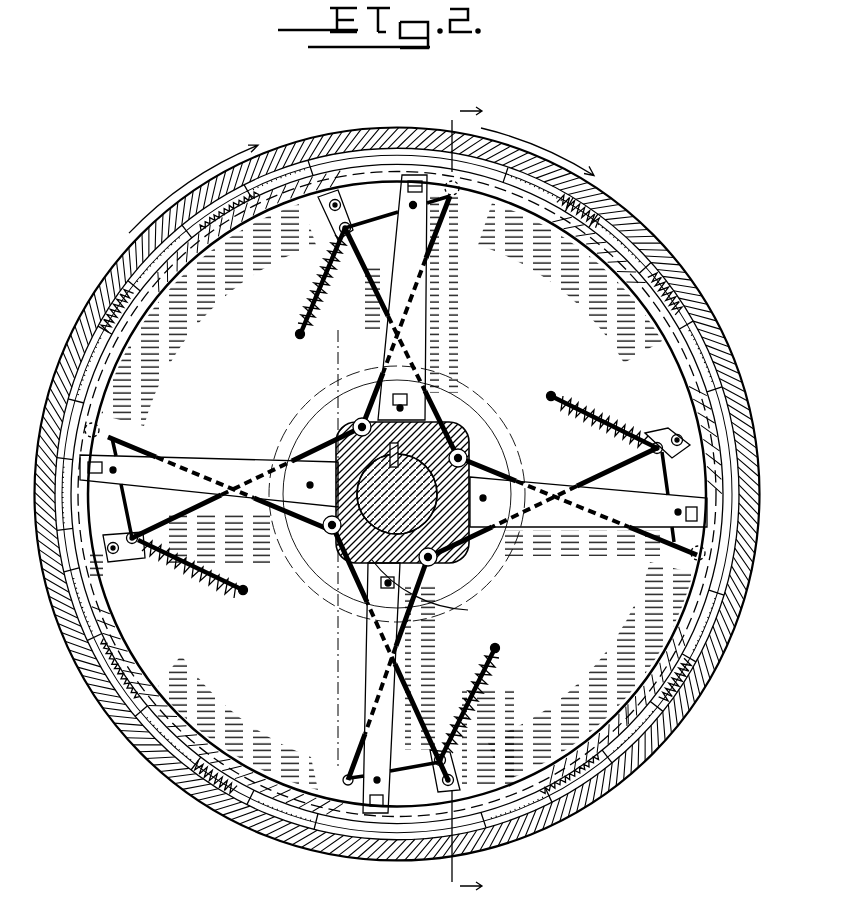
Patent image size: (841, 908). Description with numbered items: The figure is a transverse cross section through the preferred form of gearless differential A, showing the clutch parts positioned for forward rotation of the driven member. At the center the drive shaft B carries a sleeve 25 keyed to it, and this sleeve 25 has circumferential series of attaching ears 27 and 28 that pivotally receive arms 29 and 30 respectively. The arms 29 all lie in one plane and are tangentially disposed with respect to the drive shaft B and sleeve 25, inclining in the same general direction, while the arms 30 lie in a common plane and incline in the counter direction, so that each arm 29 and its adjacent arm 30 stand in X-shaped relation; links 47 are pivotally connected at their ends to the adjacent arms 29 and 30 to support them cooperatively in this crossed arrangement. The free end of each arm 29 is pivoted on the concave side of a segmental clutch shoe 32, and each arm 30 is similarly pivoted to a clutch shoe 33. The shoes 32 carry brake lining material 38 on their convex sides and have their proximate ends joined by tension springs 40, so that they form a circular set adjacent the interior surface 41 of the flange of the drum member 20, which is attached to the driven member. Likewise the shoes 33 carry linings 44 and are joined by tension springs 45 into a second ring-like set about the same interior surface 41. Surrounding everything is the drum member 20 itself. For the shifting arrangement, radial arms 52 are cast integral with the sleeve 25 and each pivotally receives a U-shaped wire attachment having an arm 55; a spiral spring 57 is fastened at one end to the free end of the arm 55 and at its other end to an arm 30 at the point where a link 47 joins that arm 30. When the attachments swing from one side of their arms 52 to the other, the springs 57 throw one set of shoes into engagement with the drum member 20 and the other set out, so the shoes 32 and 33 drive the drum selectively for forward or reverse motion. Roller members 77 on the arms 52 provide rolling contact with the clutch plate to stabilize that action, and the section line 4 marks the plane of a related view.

The drum member 20 is at (728, 345).
The interior surface 41 is at (372, 136).
The gearless differential A is at (633, 218).
The brake lining material 38 is at (640, 248).
The tension springs 40 is at (667, 307).
The segmental clutch shoes 32 is at (301, 160).
The clutch shoes 33 is at (262, 207).
The tension springs 45 is at (140, 320).
The linings 44 is at (565, 168).
The section line 4- 4 is at (459, 498).
The attaching ears 27 is at (472, 410).
The drive shaft B is at (500, 568).
The roller members 77 is at (450, 602).
The radial arms 52 is at (428, 308).
The arms 29 is at (386, 362).
The arms 30 is at (430, 393).
The links 47 is at (387, 222).
The arm 55 is at (340, 285).
The spring 57 is at (318, 276).
The sleeve 25 is at (372, 562).
The attaching ears 28 is at (352, 427).